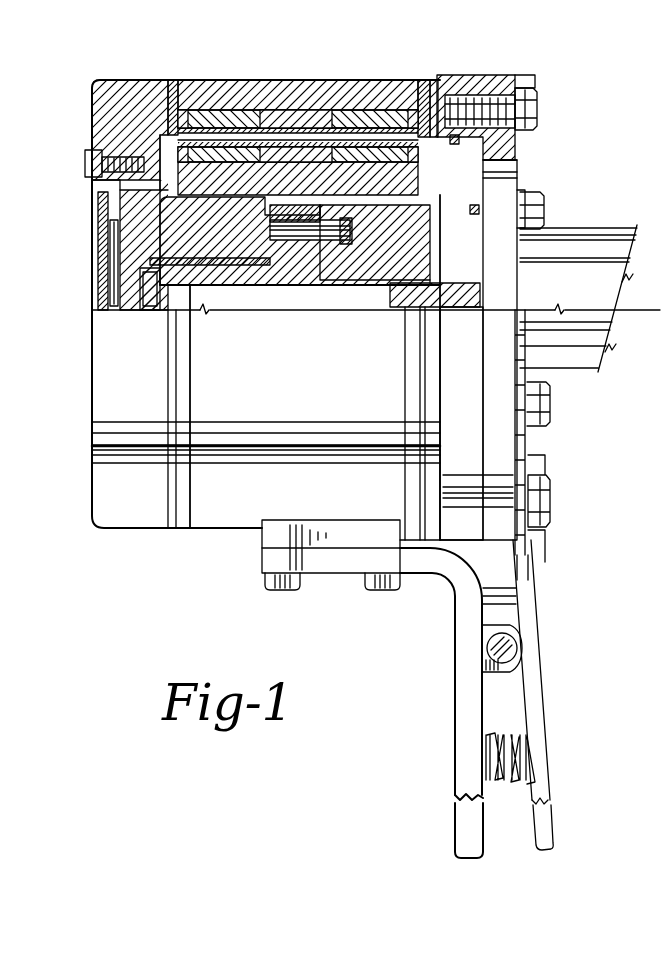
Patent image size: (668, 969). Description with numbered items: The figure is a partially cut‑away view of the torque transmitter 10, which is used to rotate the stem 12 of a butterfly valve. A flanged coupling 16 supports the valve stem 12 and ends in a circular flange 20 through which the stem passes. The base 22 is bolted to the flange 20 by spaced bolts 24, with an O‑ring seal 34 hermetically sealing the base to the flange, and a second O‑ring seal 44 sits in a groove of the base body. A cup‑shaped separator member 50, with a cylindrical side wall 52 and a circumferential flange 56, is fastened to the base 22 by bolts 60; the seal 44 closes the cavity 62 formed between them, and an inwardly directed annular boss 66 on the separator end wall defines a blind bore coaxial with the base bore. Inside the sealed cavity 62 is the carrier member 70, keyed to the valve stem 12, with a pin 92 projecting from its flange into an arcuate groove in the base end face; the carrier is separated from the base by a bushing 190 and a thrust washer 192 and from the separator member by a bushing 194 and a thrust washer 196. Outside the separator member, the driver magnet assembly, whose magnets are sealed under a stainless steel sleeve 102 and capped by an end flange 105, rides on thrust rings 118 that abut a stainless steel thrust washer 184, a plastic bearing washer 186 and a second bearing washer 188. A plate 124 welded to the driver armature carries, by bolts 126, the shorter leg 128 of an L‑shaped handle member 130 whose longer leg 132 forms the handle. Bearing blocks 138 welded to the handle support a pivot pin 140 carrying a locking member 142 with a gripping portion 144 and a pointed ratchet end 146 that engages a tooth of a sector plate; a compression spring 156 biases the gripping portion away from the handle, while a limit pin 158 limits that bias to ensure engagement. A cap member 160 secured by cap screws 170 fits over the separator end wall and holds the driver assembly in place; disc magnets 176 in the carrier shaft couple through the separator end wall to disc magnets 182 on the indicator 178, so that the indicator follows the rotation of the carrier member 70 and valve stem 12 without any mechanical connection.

The torque transmitter 10 is at (495, 73).
The valve stem 12 is at (405, 300).
The flanged coupling 16 is at (612, 228).
The circular flange 20 is at (525, 175).
The base 22 is at (525, 75).
The mounting bolts 24 is at (545, 210).
The O-ring seal 34 is at (500, 215).
The O-ring seal 44 is at (482, 208).
The separator member 50 is at (488, 73).
The cylindrical side wall 52 is at (434, 80).
The circumferential flange 56 is at (462, 140).
The bolts 60 is at (537, 110).
The cavity 62 is at (165, 135).
The annular boss 66 is at (235, 235).
The carrier member 70 is at (300, 245).
The pin 92 is at (315, 245).
The stainless steel sleeve 102 is at (250, 128).
The magnet housing 105 is at (340, 78).
The thrust ring 118 is at (185, 115).
The plate 124 is at (262, 530).
The bolts 126 is at (282, 590).
The shorter leg 128 is at (358, 560).
The handle member 130 is at (448, 682).
The longer leg 132 is at (455, 778).
The bearing blocks 138 is at (520, 655).
The pivot pin 140 is at (510, 640).
The locking member 142 is at (548, 704).
The gripping portion 144 is at (548, 778).
The ratchet end 146 is at (530, 560).
The compression spring 156 is at (528, 760).
The limit pin 158 is at (510, 604).
The cap member 160 is at (106, 80).
The cap screws 170 is at (85, 160).
The disc magnets 176 is at (150, 285).
The indicator 178 is at (103, 245).
The disc magnets 182 is at (114, 280).
The thrust washer 184 is at (470, 60).
The bearing washer 186 is at (424, 80).
The second bearing washer 188 is at (174, 80).
The bushing 190 is at (450, 300).
The thrust washer 192 is at (345, 245).
The bushing 194 is at (185, 265).
The thrust washer 196 is at (280, 240).